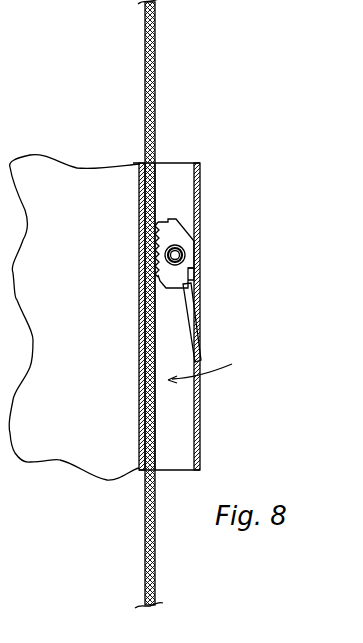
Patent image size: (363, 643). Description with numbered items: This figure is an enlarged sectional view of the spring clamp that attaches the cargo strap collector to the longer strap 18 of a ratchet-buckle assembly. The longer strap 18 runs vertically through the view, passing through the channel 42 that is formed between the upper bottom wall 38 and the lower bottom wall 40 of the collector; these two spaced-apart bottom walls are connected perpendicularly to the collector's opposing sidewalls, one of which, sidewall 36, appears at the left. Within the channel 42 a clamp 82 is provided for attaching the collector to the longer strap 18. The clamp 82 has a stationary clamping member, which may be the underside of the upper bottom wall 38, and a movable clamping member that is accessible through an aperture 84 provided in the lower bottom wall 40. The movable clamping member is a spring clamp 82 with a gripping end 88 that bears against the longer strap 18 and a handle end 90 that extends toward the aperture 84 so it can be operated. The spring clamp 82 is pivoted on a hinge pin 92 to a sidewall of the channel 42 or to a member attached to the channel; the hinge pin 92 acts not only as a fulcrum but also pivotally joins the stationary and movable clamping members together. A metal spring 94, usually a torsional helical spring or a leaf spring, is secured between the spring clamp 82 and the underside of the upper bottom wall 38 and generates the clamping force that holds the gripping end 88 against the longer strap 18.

The longer strap 18 is at (153, 68).
The sidewall 36 is at (83, 165).
The upper bottom wall 38 is at (139, 207).
The lower bottom wall 40 is at (201, 196).
The channel 42 is at (180, 150).
The spring clamp 82 is at (205, 324).
The aperture 84 is at (199, 237).
The gripping end 88 is at (157, 222).
The handle end 90 is at (202, 349).
The hinge pin 92 is at (176, 253).
The metal spring 94 is at (198, 276).